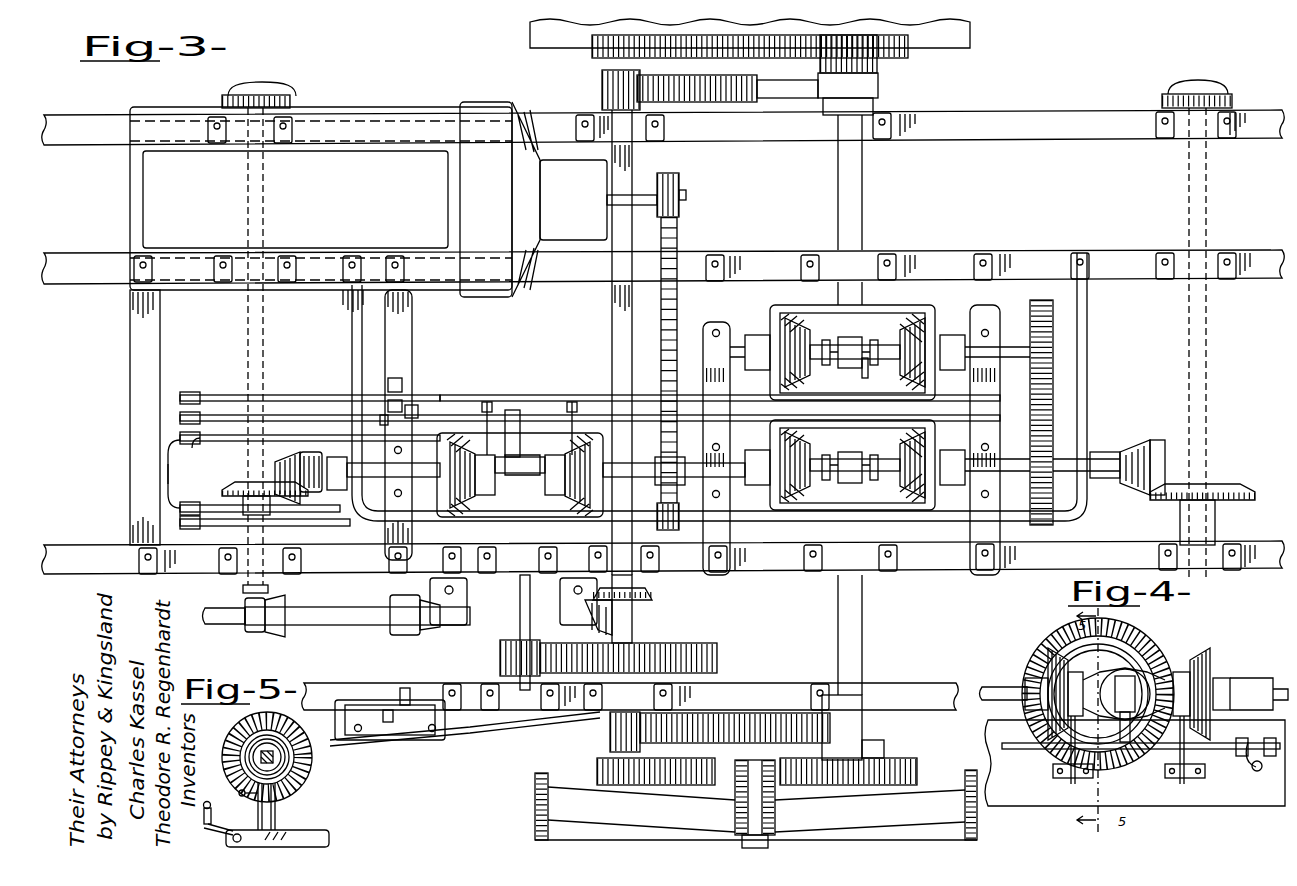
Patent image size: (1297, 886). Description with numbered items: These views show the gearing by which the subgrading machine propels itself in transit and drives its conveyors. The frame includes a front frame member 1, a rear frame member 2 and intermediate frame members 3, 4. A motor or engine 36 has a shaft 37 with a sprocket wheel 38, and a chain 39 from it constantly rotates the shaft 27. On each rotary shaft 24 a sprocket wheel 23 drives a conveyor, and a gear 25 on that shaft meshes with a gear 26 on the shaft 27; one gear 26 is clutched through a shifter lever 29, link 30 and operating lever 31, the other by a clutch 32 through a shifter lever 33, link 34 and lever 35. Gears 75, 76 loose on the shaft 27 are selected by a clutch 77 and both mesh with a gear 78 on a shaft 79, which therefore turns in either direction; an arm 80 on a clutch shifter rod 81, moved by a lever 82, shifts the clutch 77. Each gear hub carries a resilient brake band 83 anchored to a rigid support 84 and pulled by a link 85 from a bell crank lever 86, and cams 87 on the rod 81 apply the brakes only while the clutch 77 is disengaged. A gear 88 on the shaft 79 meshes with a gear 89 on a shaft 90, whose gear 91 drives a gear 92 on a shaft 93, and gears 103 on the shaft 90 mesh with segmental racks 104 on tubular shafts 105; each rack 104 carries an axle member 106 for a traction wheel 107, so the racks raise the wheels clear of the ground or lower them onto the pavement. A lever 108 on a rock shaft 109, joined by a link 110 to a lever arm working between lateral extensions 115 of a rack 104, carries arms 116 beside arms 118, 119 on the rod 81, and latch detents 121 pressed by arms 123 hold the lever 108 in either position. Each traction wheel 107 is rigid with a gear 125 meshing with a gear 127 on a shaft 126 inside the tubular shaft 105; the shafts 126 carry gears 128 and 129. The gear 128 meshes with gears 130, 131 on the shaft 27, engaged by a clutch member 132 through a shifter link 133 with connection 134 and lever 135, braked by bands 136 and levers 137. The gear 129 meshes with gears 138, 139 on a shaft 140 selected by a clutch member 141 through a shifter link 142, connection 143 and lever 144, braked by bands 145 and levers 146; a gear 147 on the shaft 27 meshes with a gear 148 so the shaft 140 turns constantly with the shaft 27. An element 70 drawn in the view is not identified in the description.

In FIG. 3, the front frame member 1 is at (790, 684).
In FIG. 3, the rear frame member 2 is at (1018, 120).
In FIG. 3, the intermediate frame member 3 is at (1034, 566).
In FIG. 4, the intermediate frame member 3 is at (1012, 796).
In FIG. 3, the intermediate frame member 4 is at (1038, 256).
In FIG. 3, the sprocket wheel 23 is at (280, 95).
In FIG. 3, the rotary shaft 24 is at (1207, 396).
In FIG. 3, the gear 25 is at (1220, 484).
In FIG. 3, the gear 26 is at (1150, 446).
In FIG. 3, the shaft 27 is at (265, 358).
In FIG. 4, the shaft 27 is at (1002, 686).
In FIG. 5, the shaft 27 is at (245, 735).
In FIG. 3, the shifter lever 29 is at (1088, 402).
In FIG. 3, the link 30 is at (345, 522).
In FIG. 3, the operating lever 31 is at (190, 525).
In FIG. 3, the clutch 32 is at (322, 458).
In FIG. 3, the shifter lever 33 is at (352, 362).
In FIG. 3, the link 34 is at (210, 505).
In FIG. 3, the lever 35 is at (180, 506).
In FIG. 3, the motor or engine 36 is at (385, 160).
In FIG. 3, the shaft 37 is at (640, 194).
In FIG. 3, the sprocket wheel 38 is at (672, 176).
In FIG. 3, the chain 39 is at (661, 312).
In FIG. 3, the post 70 is at (710, 522).
In FIG. 3, the gear 75 is at (462, 440).
In FIG. 4, the gear 75 is at (1212, 660).
In FIG. 3, the gear 76 is at (585, 440).
In FIG. 4, the gear 76 is at (1048, 665).
In FIG. 5, the gear 76 is at (222, 752).
In FIG. 3, the clutch 77 is at (540, 456).
In FIG. 4, the clutch 77 is at (1130, 675).
In FIG. 4, the gear 78 is at (1160, 642).
In FIG. 3, the shaft 79 is at (530, 594).
In FIG. 3, the arm 80 is at (512, 408).
In FIG. 4, the arm 80 is at (1130, 722).
In FIG. 3, the clutch shifter rod 81 is at (300, 414).
In FIG. 4, the clutch shifter rod 81 is at (1018, 750).
In FIG. 5, the clutch shifter rod 81 is at (238, 822).
In FIG. 3, the lever 82 is at (168, 470).
In FIG. 4, the resilient brake band 83 is at (1072, 670).
In FIG. 5, the resilient brake band 83 is at (290, 756).
In FIG. 3, the rigid support 84 is at (467, 590).
In FIG. 4, the rigid support 84 is at (1073, 786).
In FIG. 5, the rigid support 84 is at (285, 832).
In FIG. 5, the link 85 is at (275, 798).
In FIG. 3, the bell crank lever 86 is at (487, 400).
In FIG. 5, the bell crank lever 86 is at (239, 793).
In FIG. 4, the cam 87 is at (1053, 772).
In FIG. 5, the cam 87 is at (205, 826).
In FIG. 3, the gear 88 is at (500, 660).
In FIG. 3, the gear 89 is at (717, 657).
In FIG. 3, the shaft 90 is at (632, 630).
In FIG. 3, the gear 91 is at (652, 595).
In FIG. 3, the gear 92 is at (590, 628).
In FIG. 3, the shaft 93 is at (418, 612).
In FIG. 3, the gear 103 is at (602, 86).
In FIG. 3, the segmental rack 104 is at (765, 104).
In FIG. 3, the tubular shaft 105 is at (862, 214).
In FIG. 3, the axle member 106 is at (746, 792).
In FIG. 3, the traction wheel 107 is at (970, 40).
In FIG. 3, the lever 108 is at (392, 733).
In FIG. 3, the rock shaft 109 is at (402, 688).
In FIG. 4, the rock shaft 109 is at (1259, 772).
In FIG. 3, the link 110 is at (495, 730).
In FIG. 3, the lateral extension 115 is at (418, 412).
In FIG. 3, the arm 116 is at (402, 384).
In FIG. 4, the arm 116 is at (1250, 772).
In FIG. 3, the arm 118 is at (402, 404).
In FIG. 4, the arm 118 is at (1242, 740).
In FIG. 3, the arm 119 is at (380, 420).
In FIG. 4, the arm 119 is at (1272, 740).
In FIG. 3, the latch detent 121 is at (358, 732).
In FIG. 3, the arm 123 is at (386, 710).
In FIG. 3, the gear 125 is at (908, 56).
In FIG. 3, the shaft 126 is at (290, 458).
In FIG. 3, the gear 127 is at (877, 68).
In FIG. 3, the gear 128 is at (790, 512).
In FIG. 3, the gear 129 is at (970, 318).
In FIG. 3, the gear 130 is at (778, 490).
In FIG. 3, the gear 131 is at (925, 488).
In FIG. 3, the clutch member 132 is at (832, 470).
In FIG. 3, the shifter link 133 is at (878, 455).
In FIG. 3, the connection 134 is at (864, 378).
In FIG. 3, the lever 135 is at (200, 442).
In FIG. 3, the brake band 136 is at (862, 462).
In FIG. 3, the brake band operating lever 137 is at (830, 452).
In FIG. 3, the gear 138 is at (770, 333).
In FIG. 3, the gear 139 is at (912, 336).
In FIG. 3, the shaft 140 is at (1012, 346).
In FIG. 3, the clutch member 141 is at (874, 366).
In FIG. 3, the shifter link 142 is at (545, 394).
In FIG. 3, the connection 143 is at (860, 368).
In FIG. 3, the lever 144 is at (215, 394).
In FIG. 3, the brake band 145 is at (925, 350).
In FIG. 3, the brake band operating lever 146 is at (822, 365).
In FIG. 3, the gear 147 is at (1056, 462).
In FIG. 3, the gear 148 is at (1055, 375).